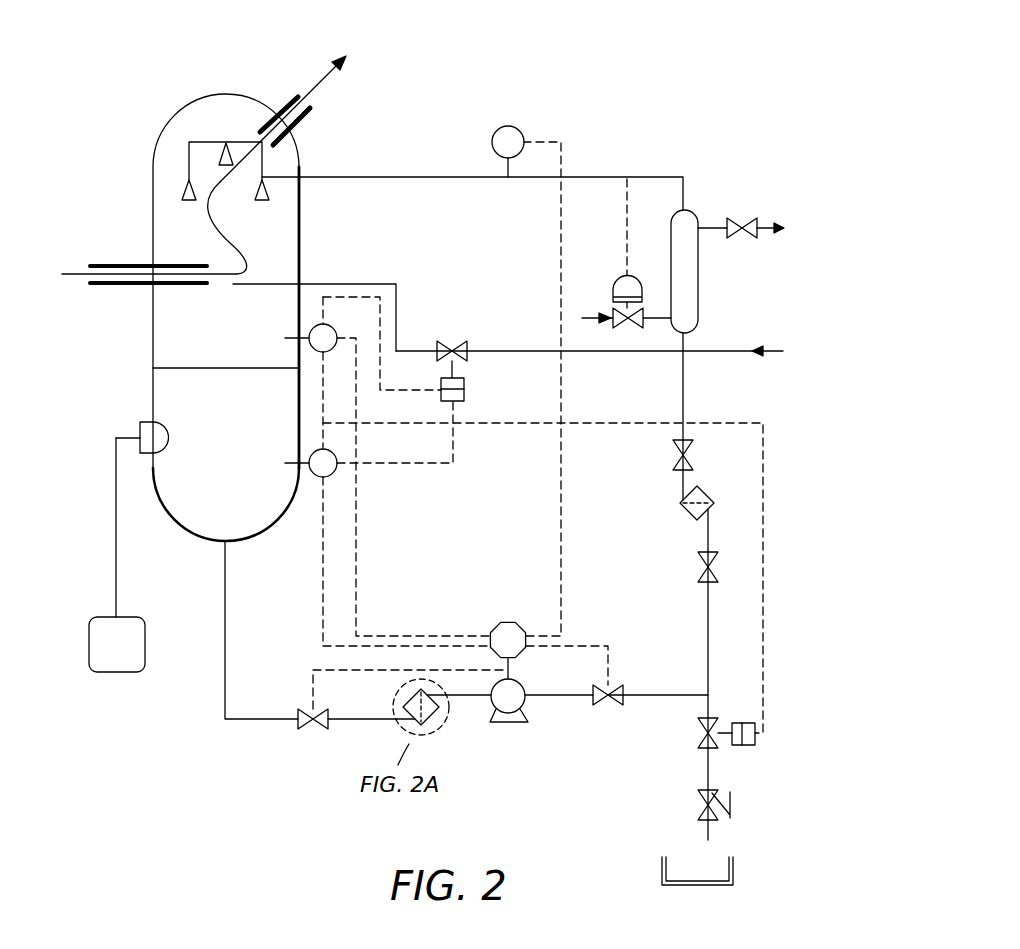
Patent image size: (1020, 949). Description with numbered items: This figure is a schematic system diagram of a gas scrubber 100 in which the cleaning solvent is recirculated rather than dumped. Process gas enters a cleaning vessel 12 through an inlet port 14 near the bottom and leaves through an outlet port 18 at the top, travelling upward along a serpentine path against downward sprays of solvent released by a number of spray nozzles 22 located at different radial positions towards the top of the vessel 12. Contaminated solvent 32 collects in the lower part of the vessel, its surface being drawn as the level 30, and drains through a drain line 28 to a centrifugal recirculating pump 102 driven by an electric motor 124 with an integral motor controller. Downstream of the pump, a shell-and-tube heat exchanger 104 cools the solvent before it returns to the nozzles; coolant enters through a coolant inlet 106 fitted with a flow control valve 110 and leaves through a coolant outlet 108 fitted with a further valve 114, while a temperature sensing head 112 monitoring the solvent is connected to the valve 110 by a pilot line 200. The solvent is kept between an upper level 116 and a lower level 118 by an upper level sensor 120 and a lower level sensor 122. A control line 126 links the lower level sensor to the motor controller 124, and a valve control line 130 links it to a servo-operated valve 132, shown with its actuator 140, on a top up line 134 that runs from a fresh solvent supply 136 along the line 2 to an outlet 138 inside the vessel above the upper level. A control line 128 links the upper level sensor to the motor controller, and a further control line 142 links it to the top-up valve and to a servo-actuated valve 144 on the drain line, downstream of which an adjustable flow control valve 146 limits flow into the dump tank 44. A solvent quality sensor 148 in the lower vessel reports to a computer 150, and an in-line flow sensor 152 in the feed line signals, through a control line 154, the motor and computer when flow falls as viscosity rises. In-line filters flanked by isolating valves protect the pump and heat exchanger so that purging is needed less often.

The gas scrubber 100 is at (124, 26).
The cleaning vessel 12 is at (147, 347).
The inlet port 14 is at (106, 286).
The outlet port 18 is at (287, 102).
The spray nozzle 22 is at (224, 142).
The drain line 28 is at (224, 594).
The liquid level 30 is at (189, 367).
The solvent 32 is at (237, 517).
The dump tank 44 is at (662, 878).
The liquid supply line 2 is at (530, 351).
The recirculating pump 102 is at (522, 688).
The heat exchanger 104 is at (700, 308).
The coolant inlet 106 is at (588, 318).
The coolant outlet 108 is at (712, 228).
The flow control valve 110 is at (624, 328).
The temperature sensing head 112 is at (612, 278).
The further valve 114 is at (740, 238).
The upper level 116 is at (312, 330).
The lower level 118 is at (312, 458).
The upper level sensor 120 is at (350, 284).
The lower level sensor 122 is at (338, 472).
The electric motor 124 is at (512, 623).
The control line 126 is at (322, 578).
The control line 128 is at (358, 568).
The valve control line 130 is at (440, 467).
The servo-operated valve 132 is at (451, 346).
The top up line 134 is at (400, 286).
The fresh solvent supply 136 is at (770, 353).
The outlet 138 is at (234, 285).
The valve actuator 140 is at (406, 392).
The control line 142 is at (765, 518).
The servo-actuated valve 144 is at (700, 742).
The adjustable flow control valve 146 is at (700, 812).
The solvent quality sensor 148 is at (138, 428).
The computer 150 is at (117, 672).
The in-line flow sensor 152 is at (508, 126).
The control line 154 is at (560, 484).
The pilot line 200 is at (627, 192).